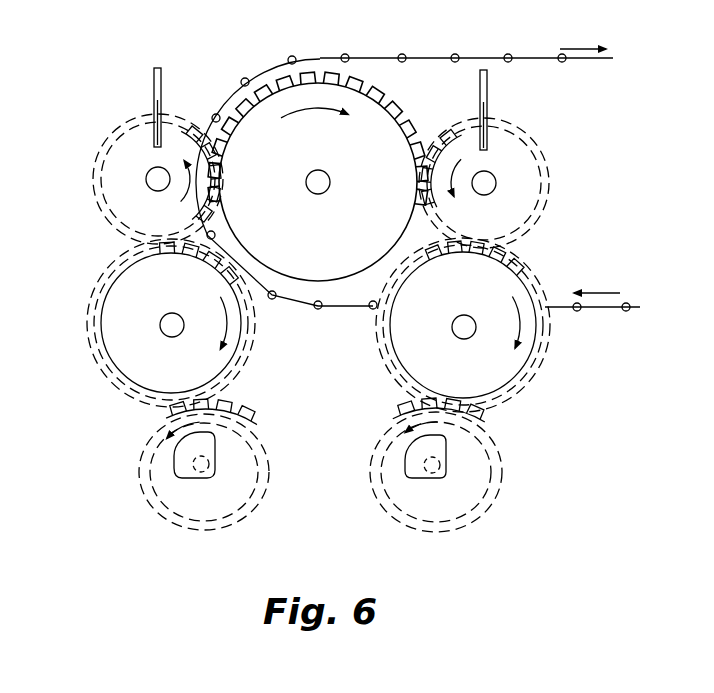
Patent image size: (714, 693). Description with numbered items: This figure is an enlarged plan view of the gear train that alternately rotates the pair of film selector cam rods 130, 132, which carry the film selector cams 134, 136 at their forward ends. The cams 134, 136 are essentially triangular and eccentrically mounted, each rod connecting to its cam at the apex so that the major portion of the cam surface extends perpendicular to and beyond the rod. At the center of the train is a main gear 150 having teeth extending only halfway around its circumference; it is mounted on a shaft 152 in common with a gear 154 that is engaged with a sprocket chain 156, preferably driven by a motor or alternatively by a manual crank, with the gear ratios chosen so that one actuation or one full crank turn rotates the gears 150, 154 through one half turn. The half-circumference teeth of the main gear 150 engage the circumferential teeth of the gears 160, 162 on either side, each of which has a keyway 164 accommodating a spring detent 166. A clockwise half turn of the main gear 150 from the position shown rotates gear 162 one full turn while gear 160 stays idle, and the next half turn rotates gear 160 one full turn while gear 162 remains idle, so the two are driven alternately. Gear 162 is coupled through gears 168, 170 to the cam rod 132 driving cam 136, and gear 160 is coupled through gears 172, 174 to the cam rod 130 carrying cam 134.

The film selector cam rod 130 is at (193, 476).
The film selector cam rod 132 is at (444, 470).
The cam 134 is at (215, 448).
The cam 136 is at (405, 455).
The main gear 150 is at (318, 176).
The shaft 152 is at (306, 184).
The gear 154 is at (406, 96).
The sprocket chain 156 is at (476, 58).
The gear 160 is at (129, 132).
The gear 162 is at (525, 164).
The keyway 164 is at (501, 128).
The spring detent 166 is at (155, 80).
The gear 168 is at (515, 278).
The gear 170 is at (476, 446).
The gear 172 is at (125, 274).
The gear 174 is at (157, 452).